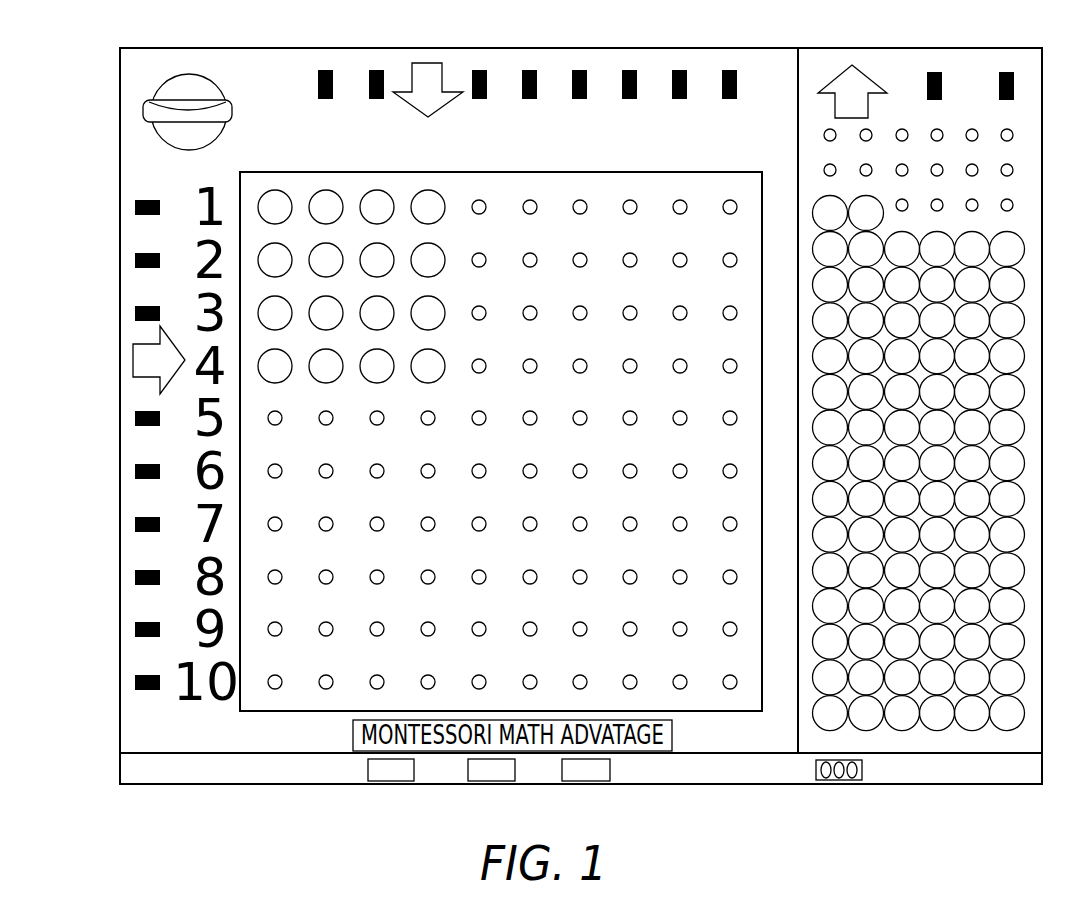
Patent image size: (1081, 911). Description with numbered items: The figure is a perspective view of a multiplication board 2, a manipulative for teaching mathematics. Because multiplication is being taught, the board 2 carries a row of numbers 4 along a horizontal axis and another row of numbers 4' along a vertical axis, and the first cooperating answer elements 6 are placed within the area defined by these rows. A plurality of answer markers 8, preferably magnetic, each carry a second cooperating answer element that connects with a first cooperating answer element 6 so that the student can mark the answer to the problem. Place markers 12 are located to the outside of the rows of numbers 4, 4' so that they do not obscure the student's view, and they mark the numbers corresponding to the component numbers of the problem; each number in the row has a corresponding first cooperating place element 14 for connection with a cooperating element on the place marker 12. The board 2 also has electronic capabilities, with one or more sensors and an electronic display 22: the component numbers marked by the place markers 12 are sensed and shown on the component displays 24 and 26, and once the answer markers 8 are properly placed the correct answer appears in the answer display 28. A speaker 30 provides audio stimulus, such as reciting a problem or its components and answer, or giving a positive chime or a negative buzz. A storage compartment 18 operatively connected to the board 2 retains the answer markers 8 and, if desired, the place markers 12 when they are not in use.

The board 2 is at (728, 727).
The row of numbers 4 is at (412, 150).
The row of numbers 4' is at (459, 795).
The first cooperating answer element 6 is at (531, 206).
The answer marker 8 is at (325, 207).
The place marker 12 is at (432, 72).
The first cooperating place element 14 is at (487, 88).
The storage compartment 18 is at (935, 757).
The electronic display 22 is at (470, 795).
The component display 24 is at (392, 778).
The component display 26 is at (465, 765).
The answer display 28 is at (610, 770).
The speaker 30 is at (862, 770).